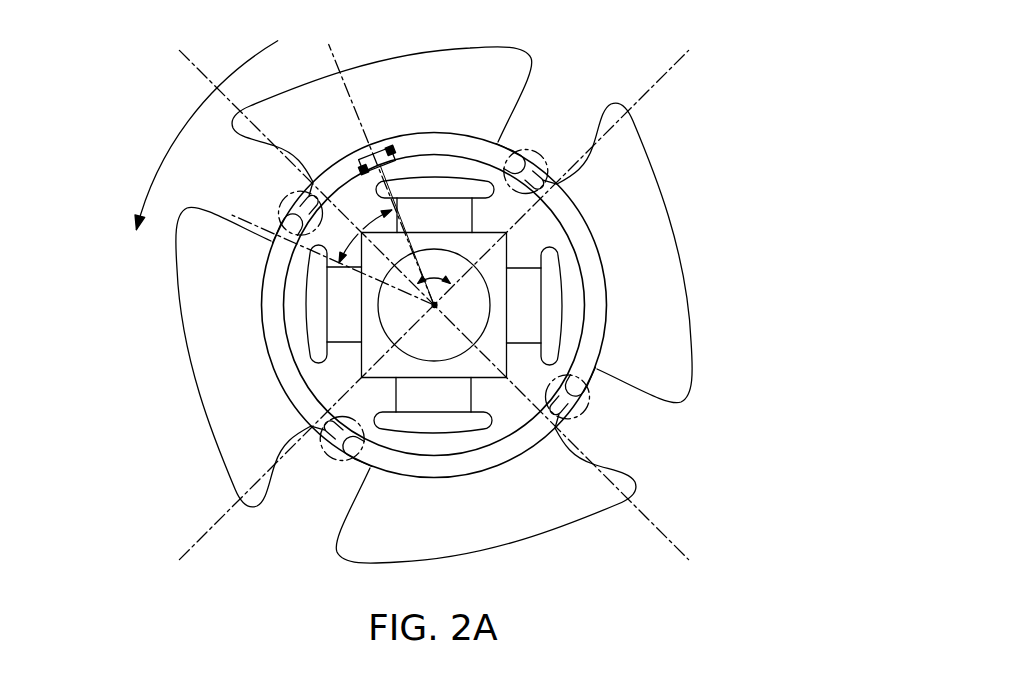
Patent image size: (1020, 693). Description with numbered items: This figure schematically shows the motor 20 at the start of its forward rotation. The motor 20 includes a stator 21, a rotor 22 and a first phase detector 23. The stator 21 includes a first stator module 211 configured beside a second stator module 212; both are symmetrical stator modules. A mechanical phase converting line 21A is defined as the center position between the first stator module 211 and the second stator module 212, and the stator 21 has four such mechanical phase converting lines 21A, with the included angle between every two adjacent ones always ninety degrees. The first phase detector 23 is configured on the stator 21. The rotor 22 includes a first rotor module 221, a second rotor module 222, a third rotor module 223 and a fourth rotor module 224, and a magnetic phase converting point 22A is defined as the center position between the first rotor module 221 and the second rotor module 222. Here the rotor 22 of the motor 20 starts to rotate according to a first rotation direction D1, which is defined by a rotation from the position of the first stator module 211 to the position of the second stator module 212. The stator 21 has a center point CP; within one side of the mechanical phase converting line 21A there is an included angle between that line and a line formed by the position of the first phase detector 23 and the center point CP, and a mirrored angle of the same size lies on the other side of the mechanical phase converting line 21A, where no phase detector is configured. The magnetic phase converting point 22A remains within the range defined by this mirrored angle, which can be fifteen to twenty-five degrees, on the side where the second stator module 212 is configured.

The motor 20 is at (446, 301).
The stator 21 is at (357, 342).
The mechanical phase converting line 21A is at (180, 58).
The first stator module 211 is at (462, 188).
The second stator module 212 is at (309, 306).
The rotor 22 is at (652, 253).
The magnetic phase converting point 22A is at (285, 196).
The first rotor module 221 is at (437, 142).
The second rotor module 222 is at (272, 283).
The third rotor module 223 is at (520, 443).
The fourth rotor module 224 is at (596, 323).
The first phase detector 23 is at (367, 153).
The center point CP is at (451, 307).
The first rotation direction D1 is at (196, 135).